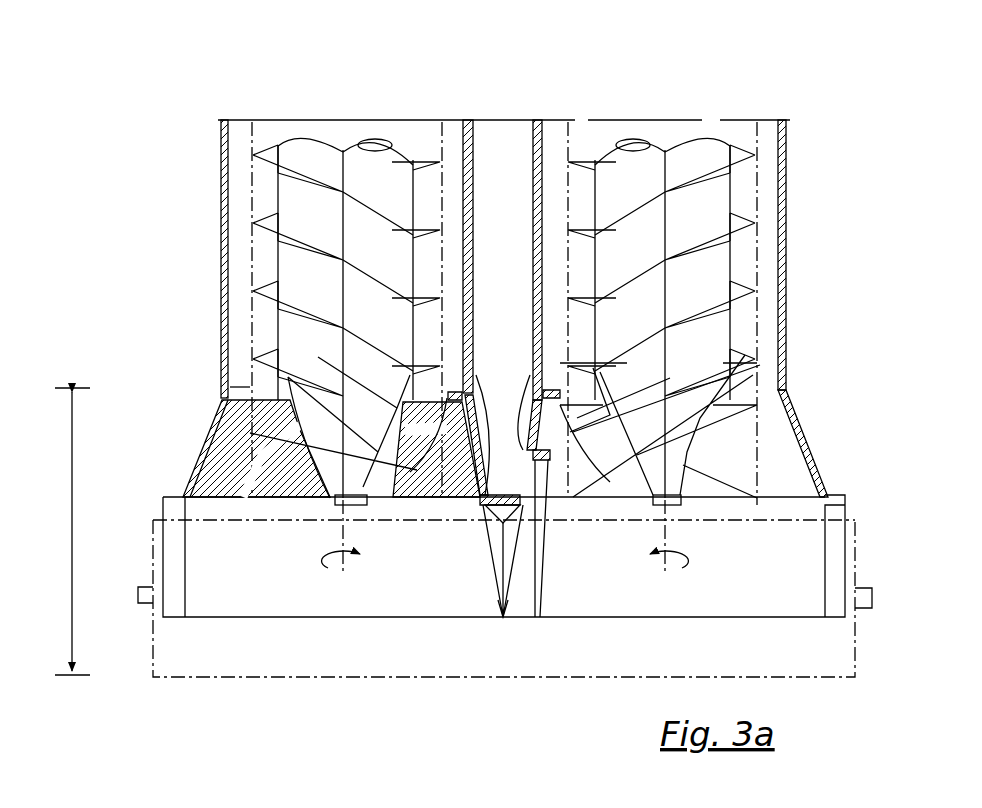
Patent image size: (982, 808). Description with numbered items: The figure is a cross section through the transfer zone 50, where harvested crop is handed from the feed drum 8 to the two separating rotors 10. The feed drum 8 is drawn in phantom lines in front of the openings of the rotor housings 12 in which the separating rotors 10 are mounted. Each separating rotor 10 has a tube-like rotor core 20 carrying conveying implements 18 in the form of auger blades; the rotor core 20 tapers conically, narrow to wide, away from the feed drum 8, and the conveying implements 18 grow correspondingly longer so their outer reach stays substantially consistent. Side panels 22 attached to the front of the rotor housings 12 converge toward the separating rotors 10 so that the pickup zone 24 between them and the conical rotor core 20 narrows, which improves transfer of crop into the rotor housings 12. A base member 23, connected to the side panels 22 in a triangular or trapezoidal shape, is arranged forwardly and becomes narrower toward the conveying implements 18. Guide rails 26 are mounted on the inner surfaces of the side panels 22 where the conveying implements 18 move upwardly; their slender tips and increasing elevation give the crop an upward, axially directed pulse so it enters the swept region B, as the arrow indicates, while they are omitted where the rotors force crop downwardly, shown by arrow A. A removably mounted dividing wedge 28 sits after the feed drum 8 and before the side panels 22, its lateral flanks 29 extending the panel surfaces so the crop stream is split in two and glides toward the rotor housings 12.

The feed drum 8 is at (858, 632).
The separating rotors 10 is at (292, 188).
The rotor housings 12 is at (540, 165).
The conveying implements 18 is at (272, 292).
The rotor core 20 is at (298, 388).
The side panels 22 is at (537, 465).
The base member 23 is at (197, 497).
The pickup zone 24 is at (232, 438).
The guide rails 26 is at (542, 562).
The dividing wedge 28 is at (492, 588).
The lateral flanks 29 is at (503, 548).
The transfer zone 50 is at (74, 531).
The arrow A is at (227, 497).
The region B is at (445, 500).